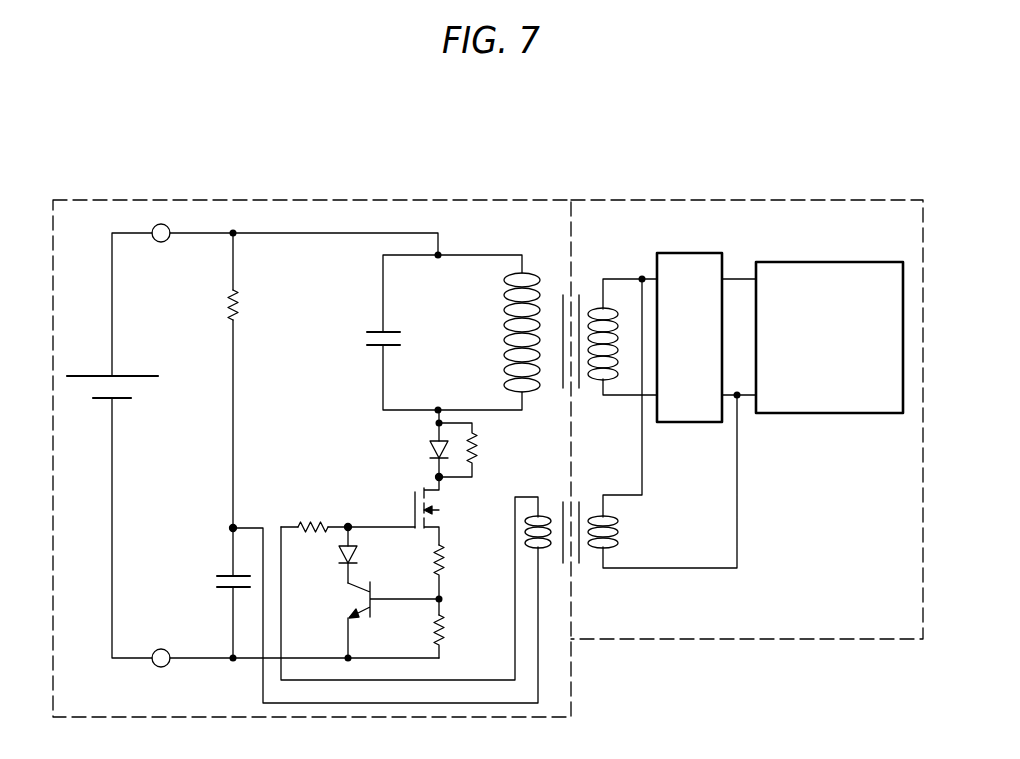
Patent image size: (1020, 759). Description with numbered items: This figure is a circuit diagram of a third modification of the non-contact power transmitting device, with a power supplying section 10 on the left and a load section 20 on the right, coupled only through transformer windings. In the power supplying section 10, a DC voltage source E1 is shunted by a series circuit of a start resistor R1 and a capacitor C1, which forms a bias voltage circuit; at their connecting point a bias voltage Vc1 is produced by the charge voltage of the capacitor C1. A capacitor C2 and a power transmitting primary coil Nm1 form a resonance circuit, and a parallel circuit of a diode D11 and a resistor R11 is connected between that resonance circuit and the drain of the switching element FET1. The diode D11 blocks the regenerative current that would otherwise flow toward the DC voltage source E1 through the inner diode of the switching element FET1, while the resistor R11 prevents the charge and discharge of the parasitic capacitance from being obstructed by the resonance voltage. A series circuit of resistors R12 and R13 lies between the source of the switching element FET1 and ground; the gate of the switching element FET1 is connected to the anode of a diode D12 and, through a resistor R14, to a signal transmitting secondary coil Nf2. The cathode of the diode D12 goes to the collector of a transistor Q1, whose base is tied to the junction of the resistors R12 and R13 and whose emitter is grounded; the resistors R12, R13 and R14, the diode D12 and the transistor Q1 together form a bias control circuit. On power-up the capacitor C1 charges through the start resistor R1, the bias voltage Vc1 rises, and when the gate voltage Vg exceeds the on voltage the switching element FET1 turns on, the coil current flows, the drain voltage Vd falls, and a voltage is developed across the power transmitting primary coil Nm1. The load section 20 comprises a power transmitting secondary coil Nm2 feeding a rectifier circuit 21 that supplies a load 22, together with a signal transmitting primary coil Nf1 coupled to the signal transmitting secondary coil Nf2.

The power supplying section 10 is at (506, 199).
The load section 20 is at (906, 199).
The rectifier circuit 21 is at (691, 253).
The load 22 is at (831, 261).
The DC voltage source E1 is at (143, 400).
The start resistor R1 is at (244, 301).
The capacitor C1 is at (218, 582).
The bias voltage Vc1 is at (231, 528).
The capacitor C2 is at (366, 340).
The power transmitting primary coil Nm1 is at (525, 272).
The power transmitting secondary coil Nm2 is at (598, 299).
The signal transmitting primary coil Nf1 is at (598, 560).
The signal transmitting secondary coil Nf2 is at (549, 505).
The diode D11 is at (429, 448).
The resistor R11 is at (482, 446).
The switching element FET1 is at (415, 489).
The drain voltage Vd is at (441, 481).
The gate voltage Vg is at (348, 523).
The resistor R14 is at (310, 516).
The diode D12 is at (370, 555).
The transistor Q1 is at (379, 620).
The resistor R12 is at (461, 580).
The resistor R13 is at (461, 636).